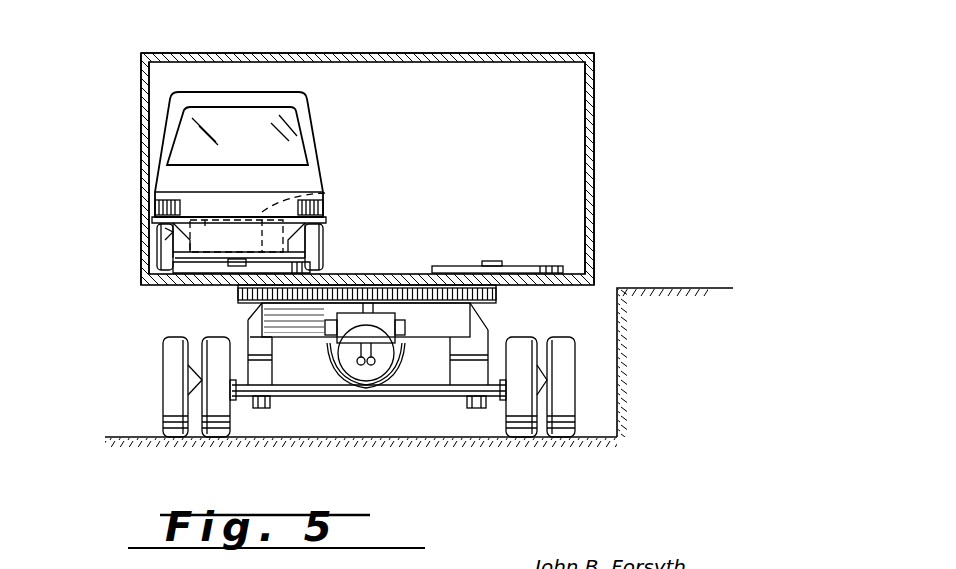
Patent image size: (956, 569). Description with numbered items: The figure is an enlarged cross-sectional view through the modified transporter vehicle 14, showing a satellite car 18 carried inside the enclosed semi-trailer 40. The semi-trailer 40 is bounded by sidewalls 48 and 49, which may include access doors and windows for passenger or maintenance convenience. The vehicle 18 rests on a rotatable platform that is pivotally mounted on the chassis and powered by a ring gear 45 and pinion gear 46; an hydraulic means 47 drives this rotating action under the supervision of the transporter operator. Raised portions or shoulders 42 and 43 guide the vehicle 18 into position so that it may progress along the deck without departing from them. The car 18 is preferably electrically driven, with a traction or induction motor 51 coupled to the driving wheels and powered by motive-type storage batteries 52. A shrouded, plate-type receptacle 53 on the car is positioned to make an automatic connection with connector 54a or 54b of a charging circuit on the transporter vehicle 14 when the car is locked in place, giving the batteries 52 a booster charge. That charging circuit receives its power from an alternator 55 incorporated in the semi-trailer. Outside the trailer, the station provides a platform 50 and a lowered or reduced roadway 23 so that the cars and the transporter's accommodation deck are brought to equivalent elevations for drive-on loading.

The transporter vehicle 14 is at (621, 101).
The vehicle 18 is at (312, 100).
The lowered or reduced roadway 23 is at (137, 437).
The semi-trailer 40 is at (176, 46).
The raised guiding shoulder 42 is at (527, 265).
The raised guiding shoulder 43 is at (315, 262).
The ring gear 45 is at (497, 295).
The pinion gear 46 is at (416, 303).
The hydraulic means 47 is at (352, 352).
The sidewall 48 is at (596, 150).
The sidewall 49 is at (142, 128).
The platform 50 is at (642, 288).
The motor 51 is at (165, 232).
The storage battery 52 is at (325, 193).
The plate-type receptacle 53 is at (236, 236).
The connector 54a is at (228, 263).
The connector 54b is at (492, 261).
The alternator 55 is at (388, 372).